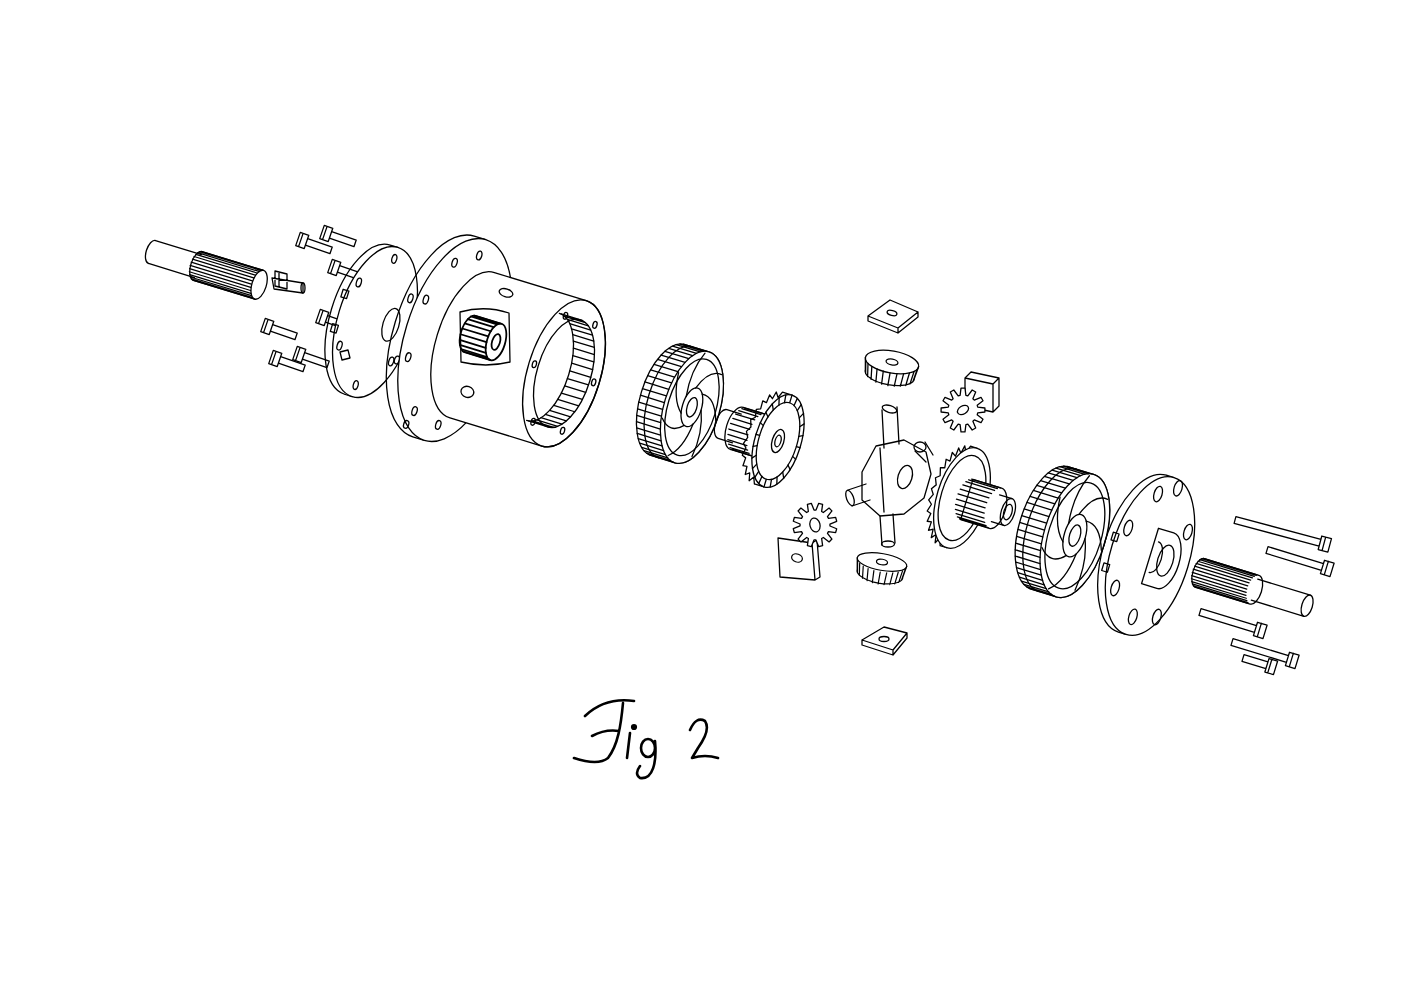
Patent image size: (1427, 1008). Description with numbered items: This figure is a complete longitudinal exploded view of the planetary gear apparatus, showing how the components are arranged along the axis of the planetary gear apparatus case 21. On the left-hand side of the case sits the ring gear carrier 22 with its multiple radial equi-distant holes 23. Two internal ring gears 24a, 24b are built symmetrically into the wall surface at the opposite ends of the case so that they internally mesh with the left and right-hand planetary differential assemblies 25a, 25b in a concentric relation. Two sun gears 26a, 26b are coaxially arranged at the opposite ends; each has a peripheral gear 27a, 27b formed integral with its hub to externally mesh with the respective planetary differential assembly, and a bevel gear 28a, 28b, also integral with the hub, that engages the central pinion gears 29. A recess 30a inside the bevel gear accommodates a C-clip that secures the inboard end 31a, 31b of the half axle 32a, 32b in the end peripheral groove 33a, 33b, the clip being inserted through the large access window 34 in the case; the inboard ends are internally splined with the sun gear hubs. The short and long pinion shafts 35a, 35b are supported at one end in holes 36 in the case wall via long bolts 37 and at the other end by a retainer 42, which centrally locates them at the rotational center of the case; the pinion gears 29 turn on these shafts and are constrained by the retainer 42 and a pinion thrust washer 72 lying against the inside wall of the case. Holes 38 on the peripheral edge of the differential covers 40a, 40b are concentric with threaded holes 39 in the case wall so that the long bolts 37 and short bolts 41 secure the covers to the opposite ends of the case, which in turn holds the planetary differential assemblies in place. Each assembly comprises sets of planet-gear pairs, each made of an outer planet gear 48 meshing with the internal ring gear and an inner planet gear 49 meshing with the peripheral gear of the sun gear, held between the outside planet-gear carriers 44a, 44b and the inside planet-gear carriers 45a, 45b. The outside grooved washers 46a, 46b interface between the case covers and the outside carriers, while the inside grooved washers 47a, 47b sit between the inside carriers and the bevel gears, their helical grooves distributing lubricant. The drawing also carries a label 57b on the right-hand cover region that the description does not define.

The planetary gear apparatus case 21 is at (542, 361).
The ring gear carrier 22 is at (472, 243).
The radial equi-distant holes 23 is at (397, 360).
The left-hand internal ring gear 24a is at (487, 322).
The right-hand internal ring gear 24b is at (623, 340).
The left-hand planetary differential assembly 25a is at (645, 469).
The right-hand planetary differential assembly 25b is at (1041, 574).
The left-hand sun gear 26a is at (788, 367).
The right-hand sun gear 26b is at (1014, 456).
The peripheral gear 27a is at (780, 374).
The peripheral gear 27b is at (1009, 466).
The bevel gear 28a is at (787, 410).
The bevel gear 28b is at (977, 447).
The central pinion gears 29 is at (907, 360).
The recess 30a is at (797, 427).
The inboard end of left-hand half axle 31a is at (237, 267).
The inboard end of right-hand half axle 31b is at (1237, 570).
The left-hand half axle 32a is at (233, 252).
The right-hand half axle 32b is at (1247, 559).
The end peripheral groove 33a is at (243, 300).
The end peripheral groove 33b is at (1200, 583).
The large access window 34 is at (410, 430).
The short pinion shaft 35a is at (850, 505).
The long pinion shaft 35b is at (893, 407).
The holes 36 is at (507, 292).
The long bolts 37 is at (1223, 617).
The holes 38 is at (343, 355).
The threaded holes 39 is at (593, 307).
The differential cover 40a is at (378, 253).
The differential cover 40b is at (1199, 512).
The short bolts 41 is at (337, 217).
The retainer 42 is at (899, 419).
The outside planet-gear carrier 44a is at (679, 403).
The outside planet-gear carrier 44b is at (1062, 532).
The inside planet-gear carrier 45a is at (665, 400).
The inside planet-gear carrier 45b is at (1047, 527).
The outside grooved washer 46a is at (691, 407).
The outside grooved washer 46b is at (1075, 535).
The inside grooved washer 47a is at (645, 448).
The inside grooved washer 47b is at (1067, 477).
The outer planet gear 48 is at (683, 353).
The inner planet gear 49 is at (657, 367).
The hub boss 57b is at (1202, 508).
The pinion thrust washer 72 is at (907, 317).